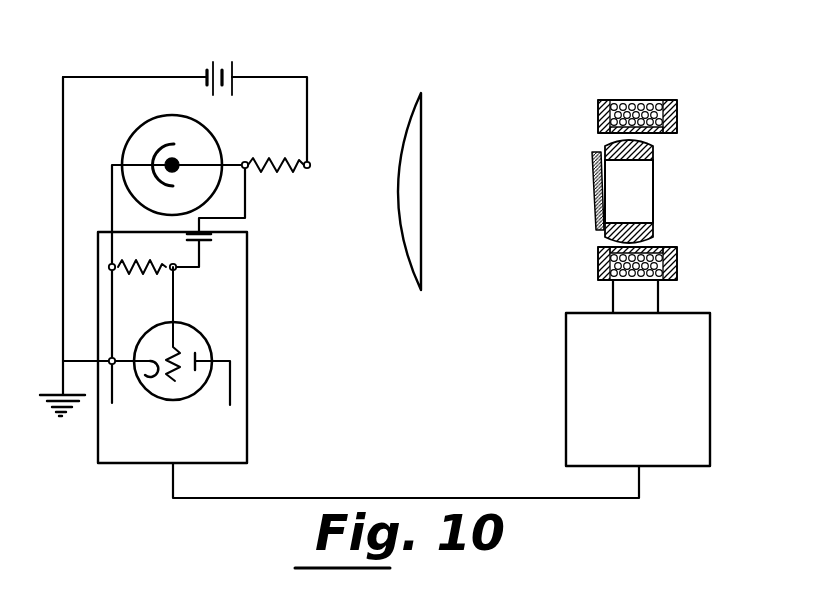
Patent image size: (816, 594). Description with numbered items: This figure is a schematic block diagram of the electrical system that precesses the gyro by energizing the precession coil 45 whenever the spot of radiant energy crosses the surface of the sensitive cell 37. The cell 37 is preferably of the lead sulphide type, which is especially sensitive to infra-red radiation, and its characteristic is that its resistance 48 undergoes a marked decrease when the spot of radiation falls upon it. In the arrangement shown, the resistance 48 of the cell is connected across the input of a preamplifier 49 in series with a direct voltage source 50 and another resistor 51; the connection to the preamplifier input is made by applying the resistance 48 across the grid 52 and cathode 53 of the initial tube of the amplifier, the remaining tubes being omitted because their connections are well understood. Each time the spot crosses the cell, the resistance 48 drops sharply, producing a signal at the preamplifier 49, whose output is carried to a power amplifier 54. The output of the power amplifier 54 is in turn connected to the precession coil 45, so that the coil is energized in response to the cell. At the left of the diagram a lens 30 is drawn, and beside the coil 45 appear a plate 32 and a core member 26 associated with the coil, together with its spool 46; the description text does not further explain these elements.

The magnet core 26 is at (653, 150).
The lens 30 is at (422, 113).
The reflecting plate 32 is at (593, 177).
The cell 37 is at (177, 114).
The precession coil 45 is at (635, 103).
The coil spool 46 is at (603, 102).
The resistance of the cell 48 is at (176, 152).
The preamplifier 49 is at (248, 310).
The direct voltage source 50 is at (227, 65).
The resistor 51 is at (273, 167).
The grid 52 is at (178, 355).
The cathode 53 is at (153, 370).
The power amplifier 54 is at (565, 372).